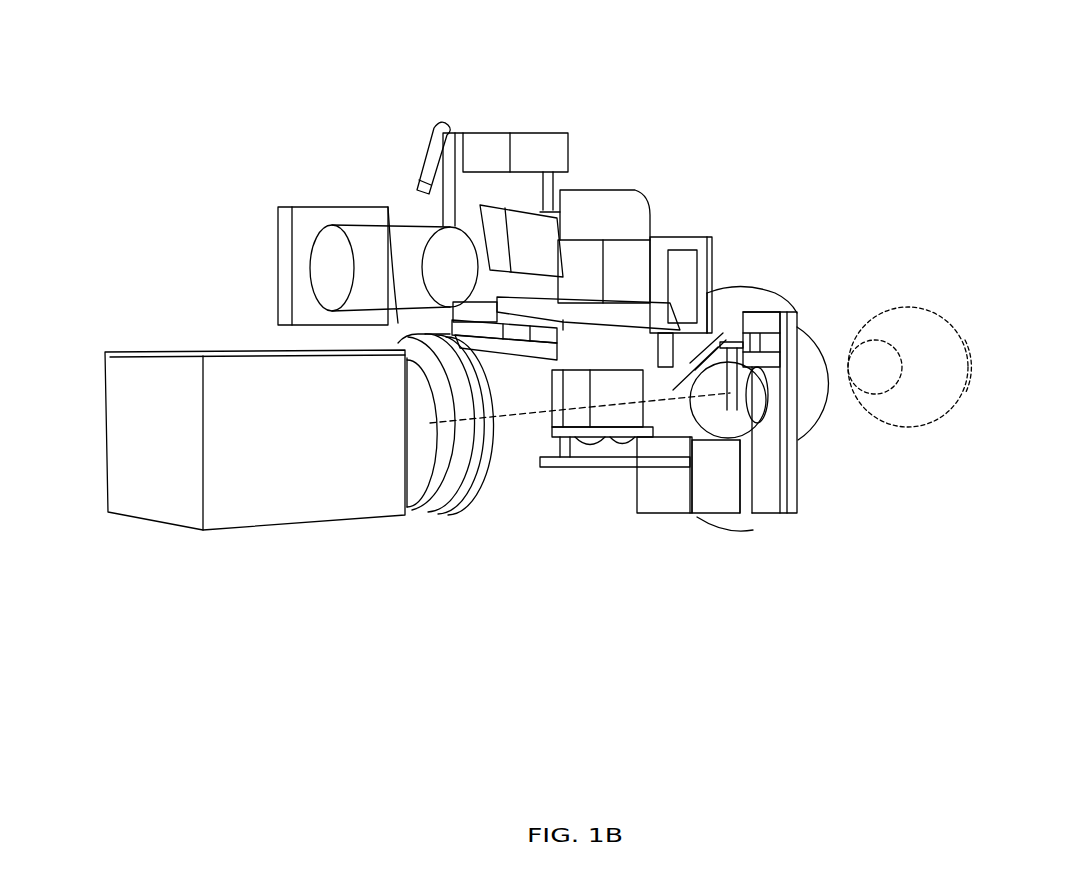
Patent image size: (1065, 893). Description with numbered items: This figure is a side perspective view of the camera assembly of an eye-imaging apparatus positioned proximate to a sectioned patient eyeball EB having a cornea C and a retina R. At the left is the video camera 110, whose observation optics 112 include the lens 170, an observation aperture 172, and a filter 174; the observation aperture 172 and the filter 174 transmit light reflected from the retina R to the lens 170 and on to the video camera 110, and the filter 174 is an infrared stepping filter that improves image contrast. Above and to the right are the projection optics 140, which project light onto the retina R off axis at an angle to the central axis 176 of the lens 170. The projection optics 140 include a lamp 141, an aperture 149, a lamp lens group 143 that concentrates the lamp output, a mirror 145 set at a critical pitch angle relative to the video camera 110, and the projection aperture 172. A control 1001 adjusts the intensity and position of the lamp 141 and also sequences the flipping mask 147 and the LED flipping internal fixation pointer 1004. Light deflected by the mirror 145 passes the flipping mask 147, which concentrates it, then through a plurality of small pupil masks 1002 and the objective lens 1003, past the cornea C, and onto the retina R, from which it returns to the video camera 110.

The video camera 110 is at (257, 540).
The observation optics 112 is at (433, 522).
The lens 170 is at (455, 515).
The observation aperture 172 is at (470, 426).
The mirror 145 is at (387, 207).
The control 1001 is at (430, 130).
The lamp 141 is at (545, 304).
The lamp lens group 143 is at (605, 215).
The aperture 149 is at (604, 271).
The central axis 176 is at (493, 447).
The projection optics 140 is at (512, 364).
The LED flipping internal fixation pointer 1004 is at (663, 460).
The filter 174 is at (553, 479).
The flipping mask 147 is at (728, 422).
The small pupil masks 1002 is at (752, 290).
The objective lens 1003 is at (812, 410).
The cornea C is at (852, 335).
The eyeball EB is at (982, 338).
The retina R is at (982, 364).